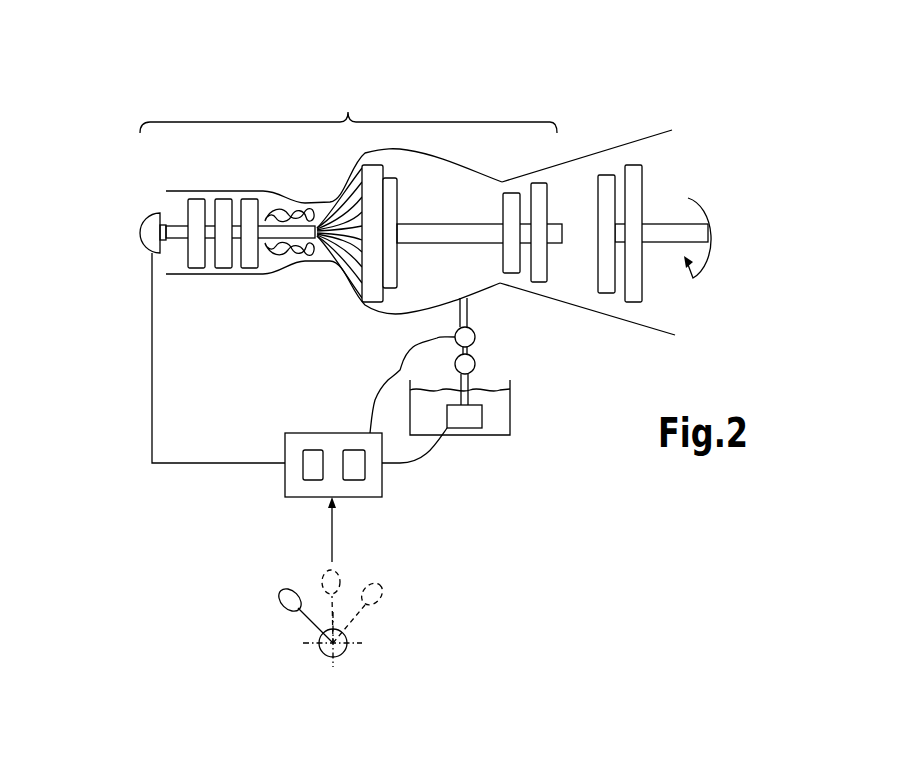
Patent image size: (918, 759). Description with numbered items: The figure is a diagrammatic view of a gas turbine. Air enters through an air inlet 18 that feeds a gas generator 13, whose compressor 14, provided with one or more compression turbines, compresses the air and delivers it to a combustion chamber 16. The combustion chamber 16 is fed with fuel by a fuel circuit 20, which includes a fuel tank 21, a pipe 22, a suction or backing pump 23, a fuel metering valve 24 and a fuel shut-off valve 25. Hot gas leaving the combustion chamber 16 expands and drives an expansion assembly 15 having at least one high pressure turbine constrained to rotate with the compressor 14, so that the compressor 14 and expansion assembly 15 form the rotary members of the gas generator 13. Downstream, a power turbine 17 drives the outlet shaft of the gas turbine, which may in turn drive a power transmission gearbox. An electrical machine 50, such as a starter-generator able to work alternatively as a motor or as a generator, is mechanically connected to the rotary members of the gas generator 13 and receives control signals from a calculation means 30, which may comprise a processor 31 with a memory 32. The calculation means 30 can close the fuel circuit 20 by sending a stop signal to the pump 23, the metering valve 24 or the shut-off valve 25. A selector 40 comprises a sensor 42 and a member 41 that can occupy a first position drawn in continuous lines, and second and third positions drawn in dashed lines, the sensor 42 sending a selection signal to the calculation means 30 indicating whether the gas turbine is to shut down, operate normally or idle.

The gas generator 13 is at (348, 107).
The compressor 14 is at (307, 286).
The expansion assembly 15 is at (518, 160).
The combustion chamber 16 is at (428, 286).
The power turbine 17 is at (620, 124).
The air inlet 18 is at (124, 246).
The fuel circuit 20 is at (499, 411).
The fuel tank 21 is at (500, 437).
The pipe 22 is at (470, 323).
The suction pump or backing pump 23 is at (472, 433).
The fuel metering valve 24 is at (475, 345).
The fuel shut-off valve 25 is at (475, 370).
The calculation means 30 is at (308, 481).
The processor 31 is at (313, 457).
The memory 32 is at (353, 470).
The selector 40 is at (324, 640).
The member 41 is at (270, 595).
The sensor 42 is at (343, 655).
The electrical machine 50 is at (150, 213).